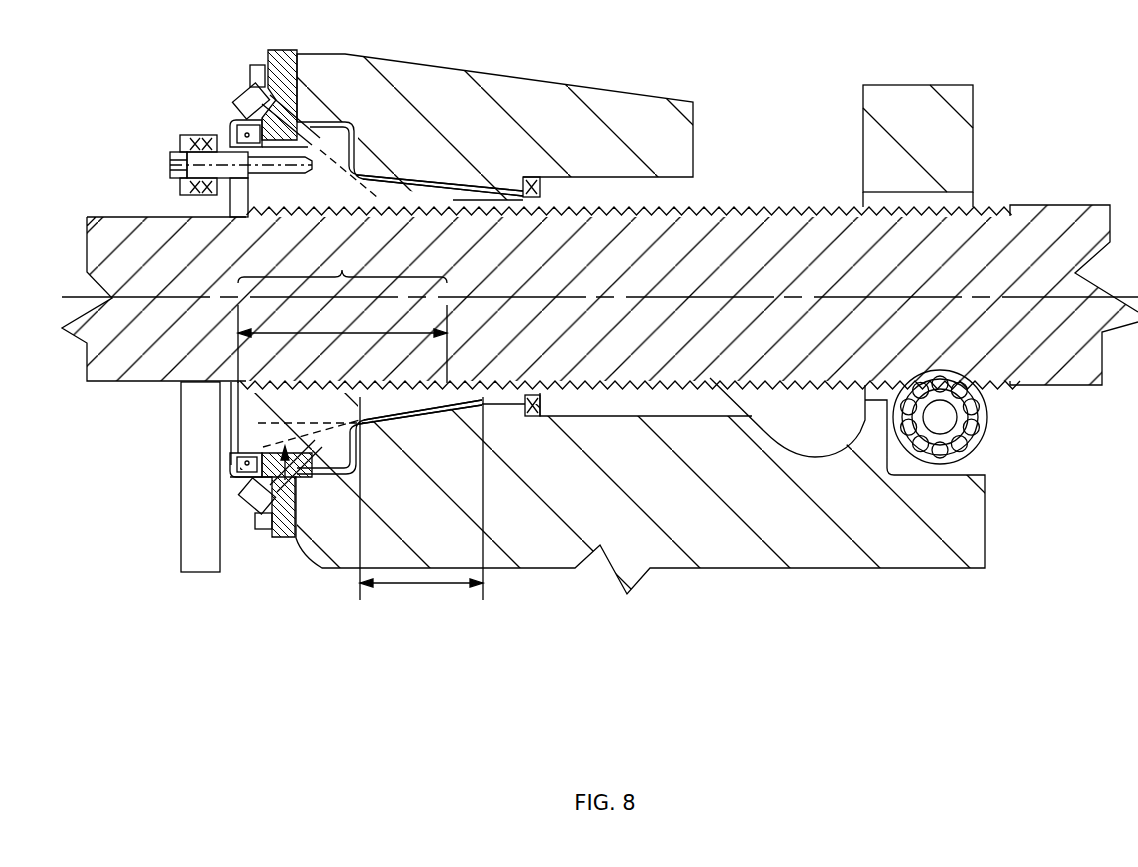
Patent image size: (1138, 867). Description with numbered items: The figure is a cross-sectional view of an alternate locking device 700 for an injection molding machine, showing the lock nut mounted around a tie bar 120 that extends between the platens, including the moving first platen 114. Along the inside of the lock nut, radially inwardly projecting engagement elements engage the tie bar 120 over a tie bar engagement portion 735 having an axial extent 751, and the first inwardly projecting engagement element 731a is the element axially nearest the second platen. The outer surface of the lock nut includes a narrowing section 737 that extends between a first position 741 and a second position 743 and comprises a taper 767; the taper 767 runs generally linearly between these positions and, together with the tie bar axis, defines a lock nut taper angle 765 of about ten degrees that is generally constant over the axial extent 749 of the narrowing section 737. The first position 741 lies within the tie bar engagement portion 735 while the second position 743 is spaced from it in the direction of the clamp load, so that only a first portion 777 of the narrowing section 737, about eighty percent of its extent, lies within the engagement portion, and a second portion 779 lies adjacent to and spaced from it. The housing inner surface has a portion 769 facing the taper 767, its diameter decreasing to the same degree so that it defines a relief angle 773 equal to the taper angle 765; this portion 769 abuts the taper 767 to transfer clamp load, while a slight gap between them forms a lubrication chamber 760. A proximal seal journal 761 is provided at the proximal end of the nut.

The first platen 114 is at (657, 120).
The tie bar 120 is at (810, 204).
The locking device 700 is at (222, 122).
The first inwardly projecting engagement element 731a is at (455, 383).
The tie bar engagement portion 735 is at (342, 262).
The narrowing section 737 is at (393, 420).
The first position 741 is at (358, 583).
The second position 743 is at (485, 591).
The axial extent of the narrowing section 749 is at (421, 597).
The axial extent of the tie bar engagement portion 751 is at (312, 333).
The lubrication chamber 760 is at (380, 168).
The proximal seal journal 761 is at (507, 184).
The lock nut taper angle 765 is at (297, 406).
The taper 767 is at (294, 477).
The portion of the inner surface of the housing 769 is at (419, 172).
The relief angle 773 is at (325, 190).
The first portion of the narrowing section 777 is at (418, 425).
The second portion of the narrowing section 779 is at (465, 400).